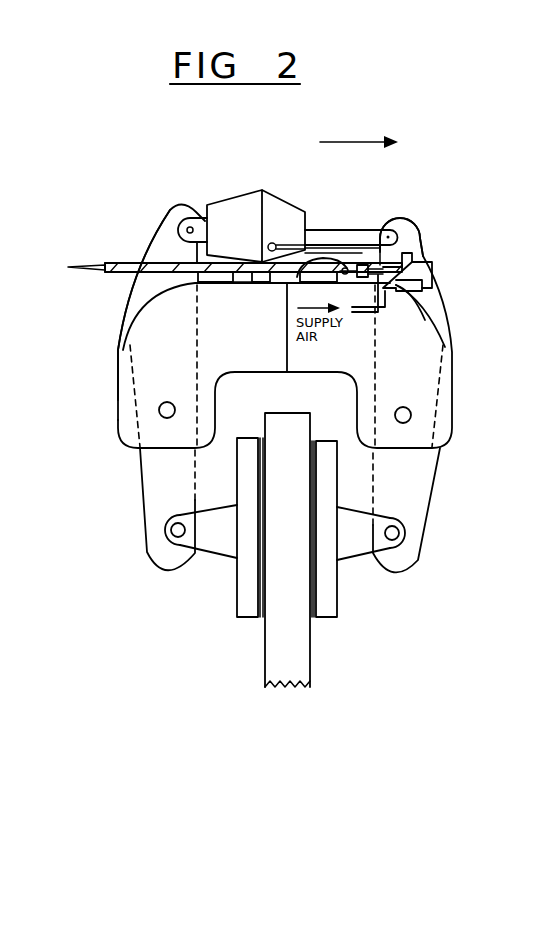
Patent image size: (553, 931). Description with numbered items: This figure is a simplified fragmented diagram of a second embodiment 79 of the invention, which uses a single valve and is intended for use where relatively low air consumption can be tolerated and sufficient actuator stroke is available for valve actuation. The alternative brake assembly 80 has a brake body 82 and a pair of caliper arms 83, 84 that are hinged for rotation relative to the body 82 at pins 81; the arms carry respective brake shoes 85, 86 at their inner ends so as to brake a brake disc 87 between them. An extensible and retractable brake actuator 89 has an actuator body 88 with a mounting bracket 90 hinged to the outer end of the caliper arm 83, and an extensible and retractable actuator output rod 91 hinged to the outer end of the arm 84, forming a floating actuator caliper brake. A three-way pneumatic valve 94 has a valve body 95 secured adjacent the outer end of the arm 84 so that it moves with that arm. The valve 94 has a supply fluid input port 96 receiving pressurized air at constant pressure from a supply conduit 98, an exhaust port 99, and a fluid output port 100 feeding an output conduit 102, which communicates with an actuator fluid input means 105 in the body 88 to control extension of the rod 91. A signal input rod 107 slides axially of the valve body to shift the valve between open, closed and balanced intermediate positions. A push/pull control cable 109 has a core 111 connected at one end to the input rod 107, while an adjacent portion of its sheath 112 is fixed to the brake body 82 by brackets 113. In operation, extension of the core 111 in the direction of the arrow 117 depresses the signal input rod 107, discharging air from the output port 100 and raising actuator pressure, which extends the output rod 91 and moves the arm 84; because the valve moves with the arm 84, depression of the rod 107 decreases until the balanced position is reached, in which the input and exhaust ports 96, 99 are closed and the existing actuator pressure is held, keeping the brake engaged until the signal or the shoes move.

The second embodiment 79 is at (308, 293).
The alternative brake assembly 80 is at (441, 188).
The pins 81 is at (160, 414).
The brake body 82 is at (128, 347).
The caliper arm 83 is at (153, 503).
The caliper arm 84 is at (405, 512).
The brake shoe 85 is at (238, 594).
The brake shoe 86 is at (343, 556).
The brake disc 87 is at (302, 638).
The actuator body 88 is at (232, 206).
The brake actuator 89 is at (273, 166).
The mounting bracket 90 is at (205, 220).
The actuator output rod 91 is at (335, 230).
The three-way pneumatic valve 94 is at (440, 257).
The valve body 95 is at (425, 261).
The supply fluid input port 96 is at (404, 290).
The supply conduit 98 is at (368, 320).
The exhaust port 99 is at (433, 283).
The fluid output port 100 is at (414, 254).
The output conduit 102 is at (360, 233).
The actuator fluid input means 105 is at (272, 243).
The signal input rod 107 is at (376, 290).
The push/pull control cable 109 is at (263, 284).
The core 111 is at (86, 263).
The sheath 112 is at (128, 262).
The brackets 113 is at (243, 278).
The arrow 117 is at (335, 142).